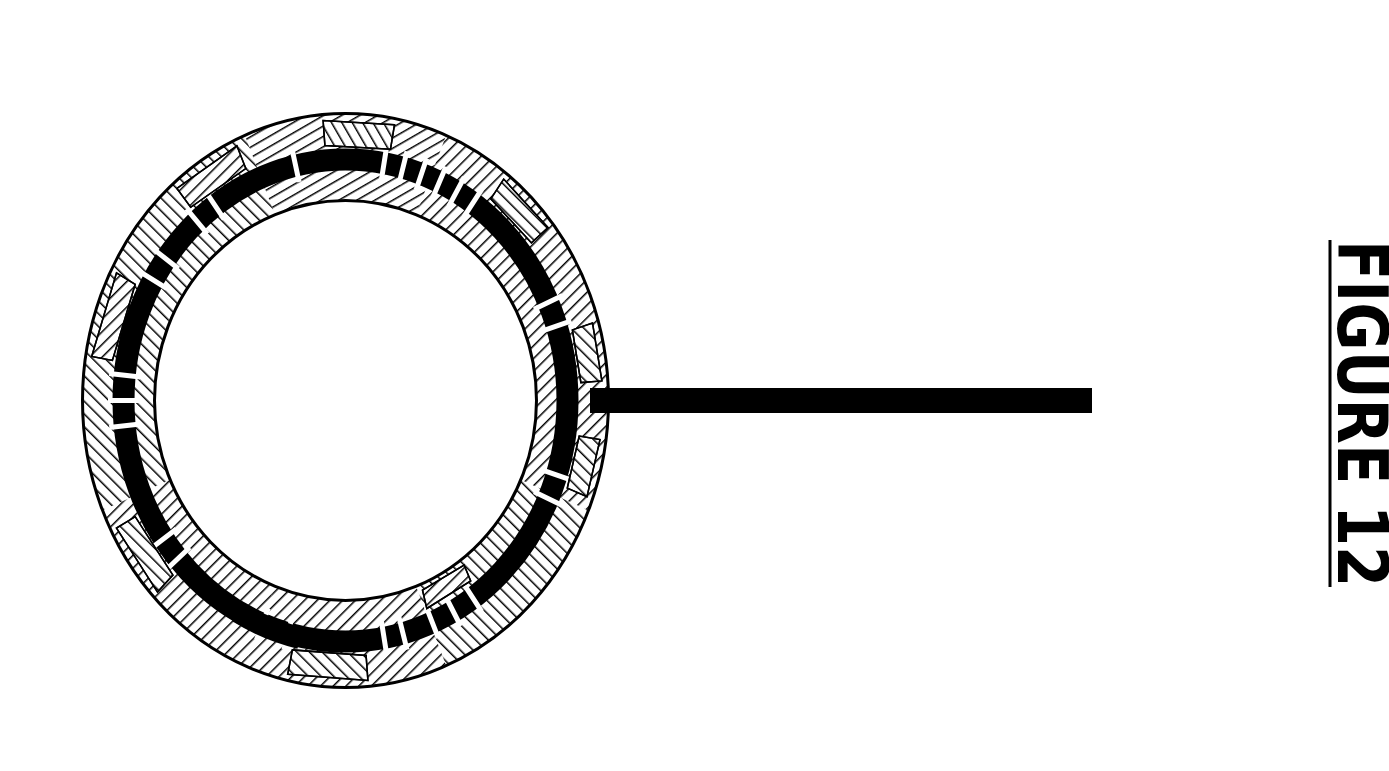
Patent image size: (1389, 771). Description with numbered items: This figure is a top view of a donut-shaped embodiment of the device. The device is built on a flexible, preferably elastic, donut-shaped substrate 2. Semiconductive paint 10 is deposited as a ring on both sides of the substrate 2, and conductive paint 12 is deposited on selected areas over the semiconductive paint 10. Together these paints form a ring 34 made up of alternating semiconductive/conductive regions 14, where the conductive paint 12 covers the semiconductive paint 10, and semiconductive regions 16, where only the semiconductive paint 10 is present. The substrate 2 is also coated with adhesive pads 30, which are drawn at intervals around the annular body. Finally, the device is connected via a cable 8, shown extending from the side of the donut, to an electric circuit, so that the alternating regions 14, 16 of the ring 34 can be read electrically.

The donut-shaped substrate 2 is at (497, 401).
The semiconductive paint 10 is at (631, 401).
The conductive paint 12 is at (582, 401).
The cable 8 is at (846, 443).
The adhesive pads 30 is at (494, 427).
The ring 34 is at (318, 140).
The semiconductive/conductive region 14 is at (335, 652).
The semiconductive region 16 is at (272, 637).